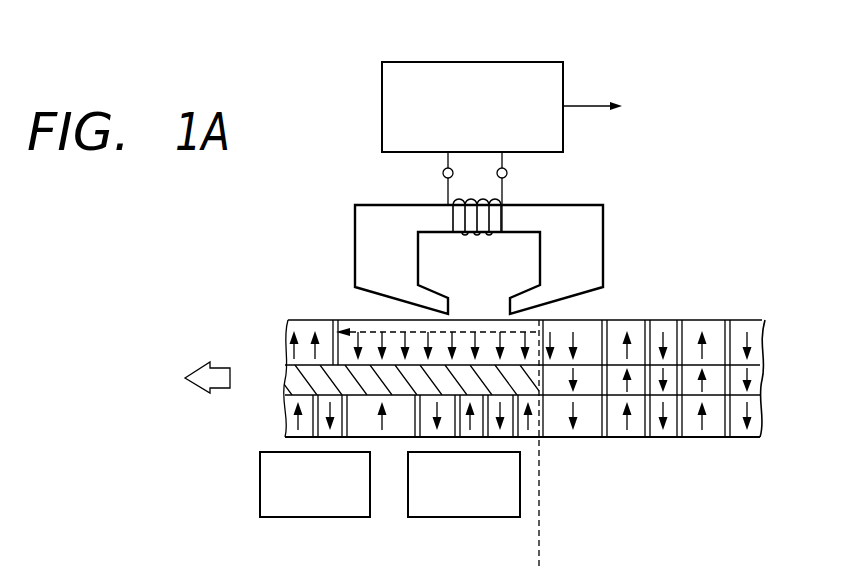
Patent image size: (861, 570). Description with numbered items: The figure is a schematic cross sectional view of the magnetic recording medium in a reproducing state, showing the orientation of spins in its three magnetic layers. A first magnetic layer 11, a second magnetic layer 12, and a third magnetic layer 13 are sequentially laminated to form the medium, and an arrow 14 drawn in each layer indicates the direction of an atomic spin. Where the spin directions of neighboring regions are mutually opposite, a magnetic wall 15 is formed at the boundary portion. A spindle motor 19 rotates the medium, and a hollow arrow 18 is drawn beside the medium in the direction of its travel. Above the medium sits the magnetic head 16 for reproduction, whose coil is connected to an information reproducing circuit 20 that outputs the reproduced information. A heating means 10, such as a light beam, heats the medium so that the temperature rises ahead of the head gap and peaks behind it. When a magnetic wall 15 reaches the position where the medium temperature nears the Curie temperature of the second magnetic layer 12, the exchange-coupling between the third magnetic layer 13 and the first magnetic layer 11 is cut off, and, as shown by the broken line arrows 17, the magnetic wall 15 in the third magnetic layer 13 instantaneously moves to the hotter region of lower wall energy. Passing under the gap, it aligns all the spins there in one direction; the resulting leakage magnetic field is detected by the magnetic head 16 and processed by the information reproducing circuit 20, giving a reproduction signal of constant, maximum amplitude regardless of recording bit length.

The heating means 10 is at (506, 518).
The first magnetic layer 11 is at (764, 413).
The second magnetic layer 12 is at (763, 378).
The third magnetic layer 13 is at (763, 323).
The arrow 14 is at (746, 430).
The magnetic wall 15 is at (545, 320).
The magnetic head 16 is at (592, 205).
The broken line arrows 17 is at (340, 330).
The medium moving direction 18 is at (222, 357).
The spindle motor 19 is at (360, 518).
The information reproducing circuit 20 is at (557, 60).